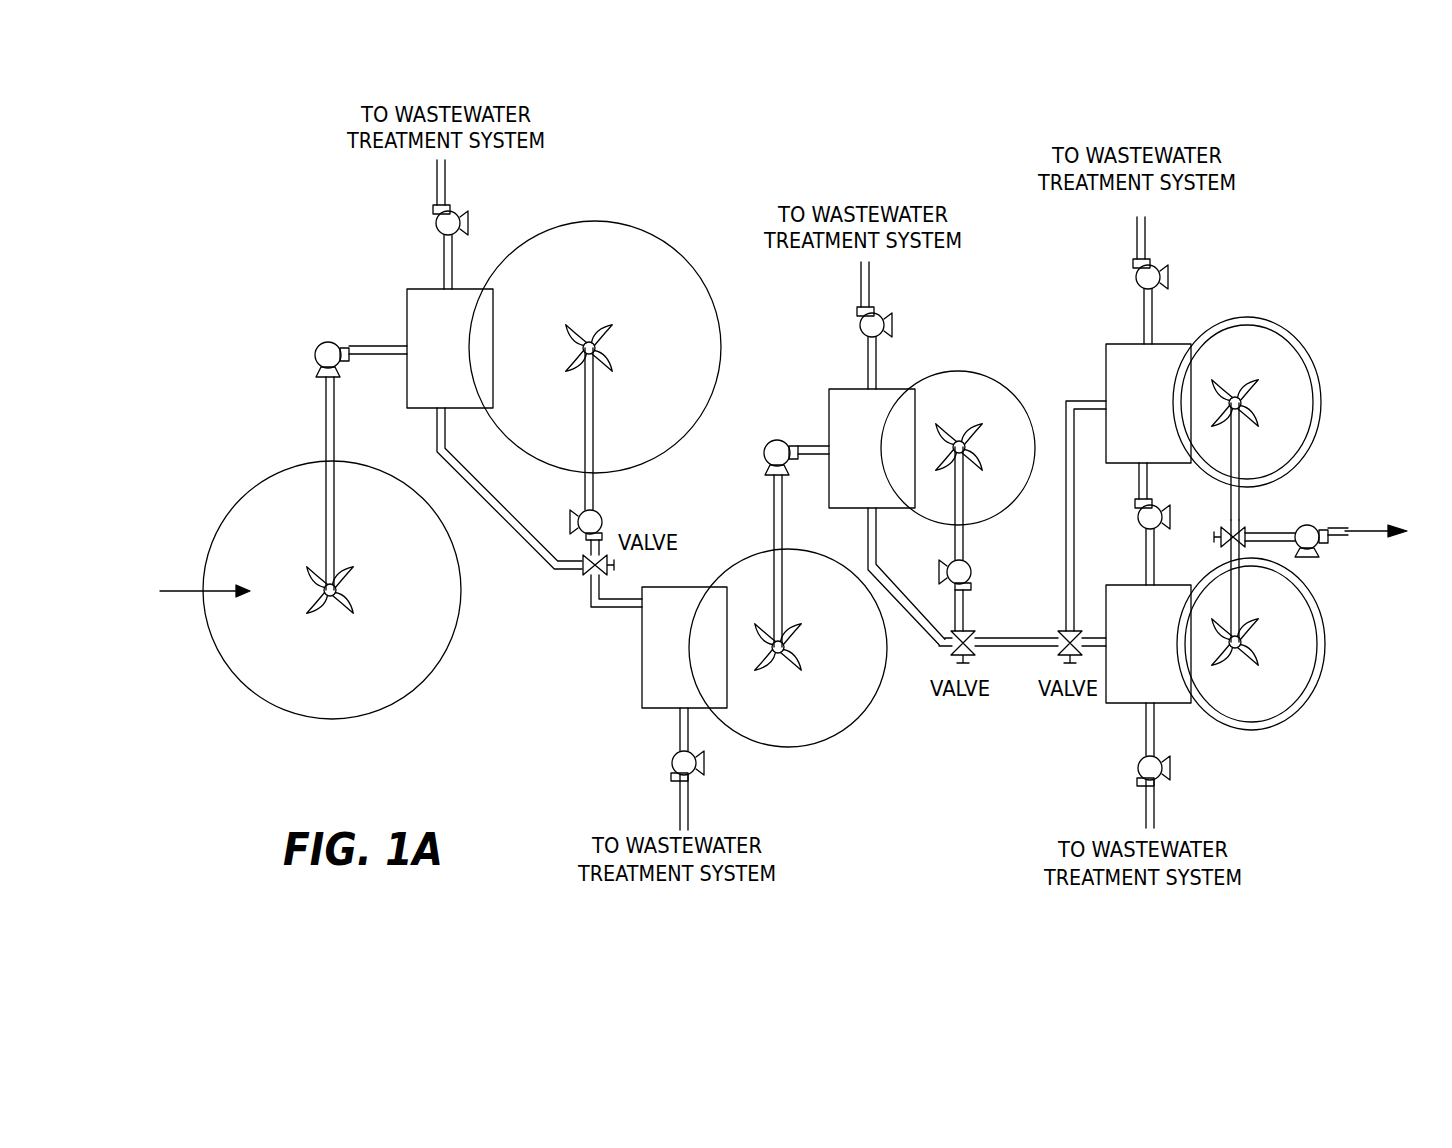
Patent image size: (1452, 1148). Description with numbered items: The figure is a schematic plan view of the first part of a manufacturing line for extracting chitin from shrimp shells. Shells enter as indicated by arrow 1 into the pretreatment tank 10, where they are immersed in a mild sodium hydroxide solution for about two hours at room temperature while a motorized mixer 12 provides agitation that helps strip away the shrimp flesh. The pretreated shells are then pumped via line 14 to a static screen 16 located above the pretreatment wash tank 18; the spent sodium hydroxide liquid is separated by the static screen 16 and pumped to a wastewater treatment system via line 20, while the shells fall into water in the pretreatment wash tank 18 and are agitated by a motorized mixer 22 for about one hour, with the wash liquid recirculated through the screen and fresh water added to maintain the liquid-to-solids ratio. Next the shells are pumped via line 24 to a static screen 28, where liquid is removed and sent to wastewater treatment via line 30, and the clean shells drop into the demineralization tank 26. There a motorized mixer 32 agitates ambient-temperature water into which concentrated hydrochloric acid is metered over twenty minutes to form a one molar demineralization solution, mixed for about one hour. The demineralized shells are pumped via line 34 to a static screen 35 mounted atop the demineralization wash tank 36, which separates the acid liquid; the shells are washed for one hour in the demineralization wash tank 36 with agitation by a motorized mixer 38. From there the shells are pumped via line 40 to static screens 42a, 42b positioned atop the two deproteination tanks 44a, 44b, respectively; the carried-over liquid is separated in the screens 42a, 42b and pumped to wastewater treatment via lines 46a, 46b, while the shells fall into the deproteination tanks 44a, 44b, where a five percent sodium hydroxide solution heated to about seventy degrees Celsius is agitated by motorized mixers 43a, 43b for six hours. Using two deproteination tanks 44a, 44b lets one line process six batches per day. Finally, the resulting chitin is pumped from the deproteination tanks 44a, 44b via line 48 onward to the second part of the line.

The arrow 1 is at (182, 590).
The pretreatment tank 10 is at (372, 713).
The motorized mixer 12 is at (343, 585).
The line 14 is at (325, 432).
The static screen 16 is at (407, 317).
The pretreatment wash tank 18 is at (665, 243).
The line 20 is at (446, 190).
The motorized mixer 22 is at (617, 375).
The line 24 is at (493, 512).
The demineralization tank 26 is at (850, 724).
The static screen 28 is at (642, 697).
The line 30 is at (680, 746).
The motorized mixer 32 is at (800, 650).
The line 34 is at (775, 516).
The static screen 35 is at (835, 388).
The demineralization wash tank 36 is at (1016, 500).
The motorized mixer 38 is at (938, 420).
The line 40 is at (1103, 388).
The static screen 42a is at (1118, 343).
The static screen 42b is at (1112, 703).
The motorized mixer 43a is at (1253, 390).
The motorized mixer 43b is at (1240, 661).
The deproteination tank 44a is at (1288, 476).
The deproteination tank 44b is at (1325, 642).
The line 46a is at (1147, 242).
The line 46b is at (1143, 815).
The line 48 is at (1345, 522).